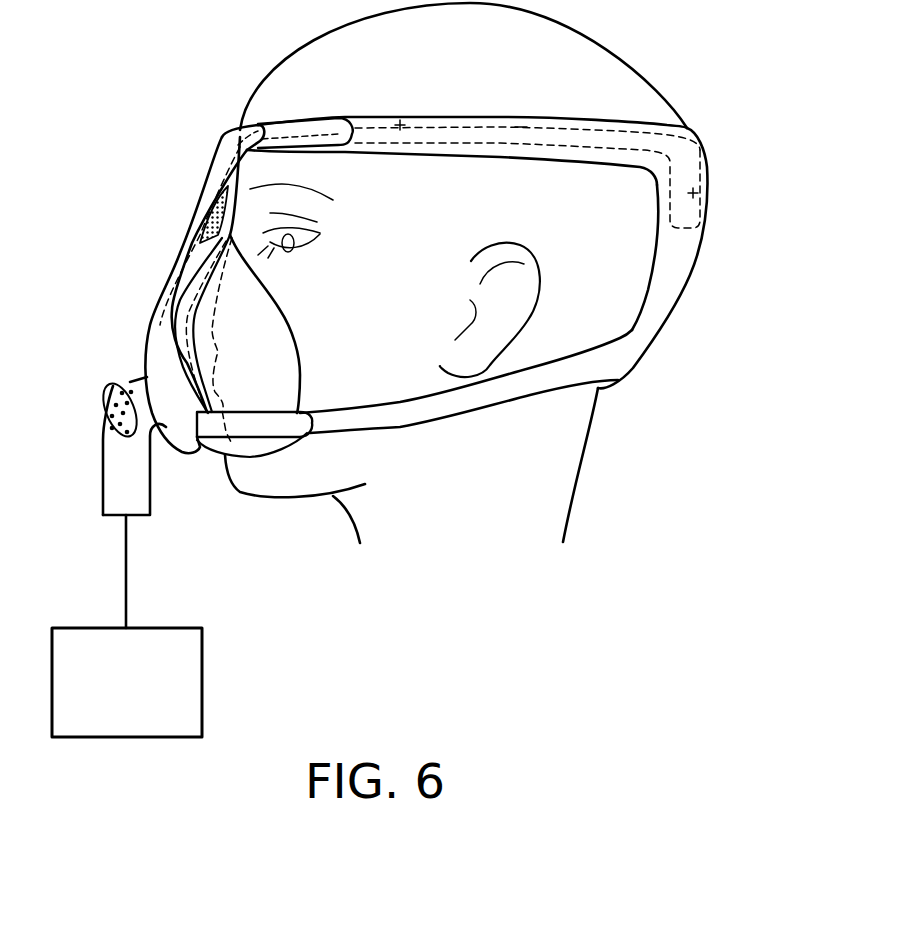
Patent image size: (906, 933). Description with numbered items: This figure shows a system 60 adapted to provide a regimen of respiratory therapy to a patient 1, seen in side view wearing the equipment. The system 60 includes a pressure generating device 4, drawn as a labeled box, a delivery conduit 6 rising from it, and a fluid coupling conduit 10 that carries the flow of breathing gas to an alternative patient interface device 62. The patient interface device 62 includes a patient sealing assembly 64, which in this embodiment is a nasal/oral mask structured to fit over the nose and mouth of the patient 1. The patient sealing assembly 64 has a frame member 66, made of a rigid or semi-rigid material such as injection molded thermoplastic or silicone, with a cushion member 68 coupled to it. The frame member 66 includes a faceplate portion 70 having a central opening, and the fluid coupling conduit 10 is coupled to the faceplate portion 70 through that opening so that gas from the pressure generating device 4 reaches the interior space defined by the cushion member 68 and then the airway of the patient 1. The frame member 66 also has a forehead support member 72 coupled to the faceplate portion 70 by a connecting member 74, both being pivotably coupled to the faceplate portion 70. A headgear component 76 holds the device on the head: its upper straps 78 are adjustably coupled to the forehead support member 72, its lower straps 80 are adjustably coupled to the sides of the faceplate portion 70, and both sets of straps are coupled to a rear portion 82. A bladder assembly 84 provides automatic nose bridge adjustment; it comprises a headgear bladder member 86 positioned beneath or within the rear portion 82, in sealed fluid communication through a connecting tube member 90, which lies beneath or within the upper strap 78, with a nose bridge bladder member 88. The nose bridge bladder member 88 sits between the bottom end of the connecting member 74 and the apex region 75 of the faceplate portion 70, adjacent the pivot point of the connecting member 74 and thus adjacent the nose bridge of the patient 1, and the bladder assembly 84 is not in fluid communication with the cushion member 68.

The patient 1 is at (590, 60).
The pressure generating device 4 is at (204, 683).
The delivery conduit 6 is at (126, 583).
The fluid coupling conduit 10 is at (123, 481).
The system 60 is at (157, 104).
The patient interface device 62 is at (114, 351).
The patient sealing assembly 64 is at (202, 466).
The frame member 66 is at (185, 250).
The cushion member 68 is at (280, 340).
The faceplate portion 70 is at (157, 332).
The forehead support member 72 is at (240, 128).
The connecting member 74 is at (195, 232).
The apex region 75 is at (190, 278).
The headgear component 76 is at (687, 128).
The upper straps 78 is at (468, 116).
The lower straps 80 is at (462, 405).
The rear portion 82 is at (683, 255).
The bladder assembly 84 is at (521, 127).
The headgear bladder member 86 is at (707, 192).
The nose bridge bladder member 88 is at (205, 210).
The connecting tube member 90 is at (400, 118).